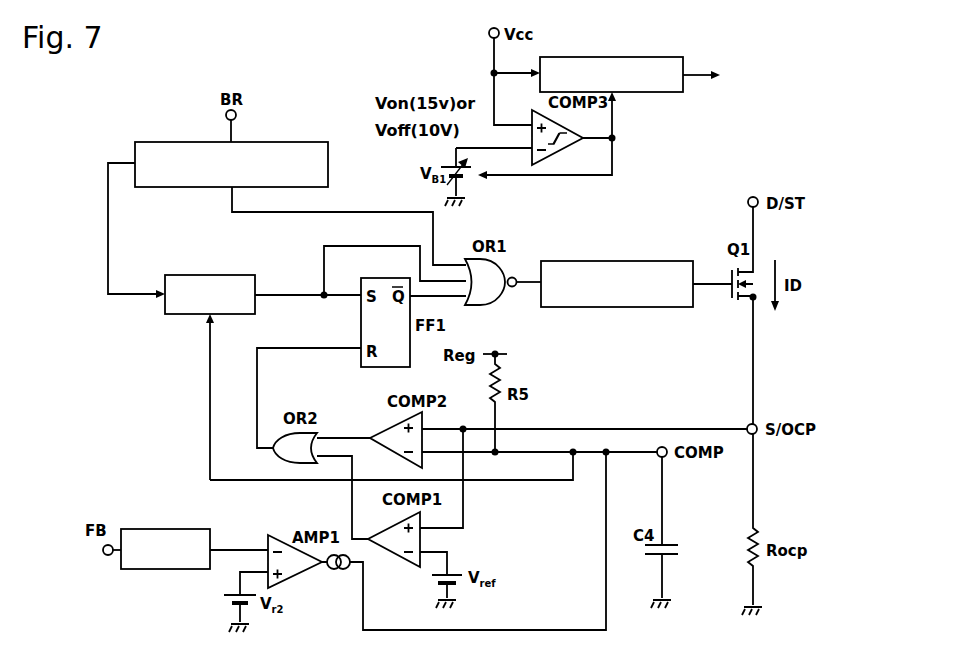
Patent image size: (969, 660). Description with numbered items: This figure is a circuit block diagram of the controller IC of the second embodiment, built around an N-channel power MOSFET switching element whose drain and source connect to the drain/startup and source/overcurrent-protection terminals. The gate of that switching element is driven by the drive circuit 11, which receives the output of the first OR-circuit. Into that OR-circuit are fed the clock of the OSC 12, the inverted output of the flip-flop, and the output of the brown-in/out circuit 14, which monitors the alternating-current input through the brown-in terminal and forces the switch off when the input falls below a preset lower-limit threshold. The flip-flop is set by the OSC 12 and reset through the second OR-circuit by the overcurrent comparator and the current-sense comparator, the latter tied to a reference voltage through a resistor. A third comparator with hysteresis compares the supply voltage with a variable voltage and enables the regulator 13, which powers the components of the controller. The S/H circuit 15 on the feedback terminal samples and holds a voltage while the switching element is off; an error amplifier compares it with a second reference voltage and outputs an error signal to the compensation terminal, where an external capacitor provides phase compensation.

The drive circuit 11 is at (650, 261).
The OSC (internal oscillator) 12 is at (237, 275).
The regulator 13 is at (650, 57).
The brown-in/out circuit 14 is at (268, 142).
The sample-and-hold circuit (S/H circuit) 15 is at (193, 529).